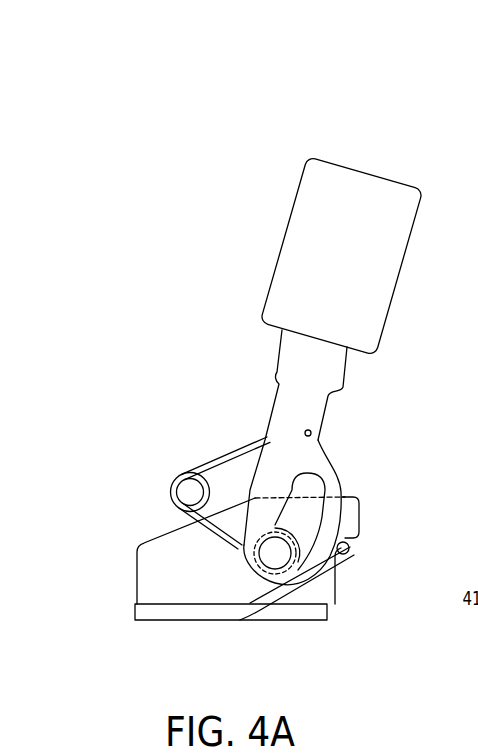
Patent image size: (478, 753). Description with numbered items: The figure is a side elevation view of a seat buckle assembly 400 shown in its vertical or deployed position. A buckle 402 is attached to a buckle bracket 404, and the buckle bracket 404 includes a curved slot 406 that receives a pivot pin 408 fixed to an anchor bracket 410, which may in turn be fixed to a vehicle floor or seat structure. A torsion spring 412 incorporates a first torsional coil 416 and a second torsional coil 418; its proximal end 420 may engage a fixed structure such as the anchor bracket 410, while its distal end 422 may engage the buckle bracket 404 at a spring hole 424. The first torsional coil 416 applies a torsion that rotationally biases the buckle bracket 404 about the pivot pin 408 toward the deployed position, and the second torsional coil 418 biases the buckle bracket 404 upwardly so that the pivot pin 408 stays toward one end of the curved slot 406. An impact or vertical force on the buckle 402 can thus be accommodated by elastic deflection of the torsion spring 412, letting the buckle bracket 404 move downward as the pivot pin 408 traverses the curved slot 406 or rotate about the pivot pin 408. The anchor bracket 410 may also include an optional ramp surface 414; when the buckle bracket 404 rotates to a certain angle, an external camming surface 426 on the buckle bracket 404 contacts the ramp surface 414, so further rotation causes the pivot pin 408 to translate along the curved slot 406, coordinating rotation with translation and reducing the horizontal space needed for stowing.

The seat buckle assembly 400 is at (368, 148).
The buckle 402 is at (395, 265).
The buckle bracket 404 is at (338, 367).
The curved slot 406 is at (333, 484).
The pivot pin 408 is at (272, 553).
The anchor bracket 410 is at (348, 540).
The torsion spring 412 is at (184, 471).
The ramp surface 414 is at (357, 550).
The first torsional coil 416 is at (238, 606).
The second torsional coil 418 is at (170, 488).
The proximal end 420 is at (325, 610).
The distal end 422 is at (312, 433).
The spring hole 424 is at (360, 422).
The external camming surface 426 is at (340, 513).